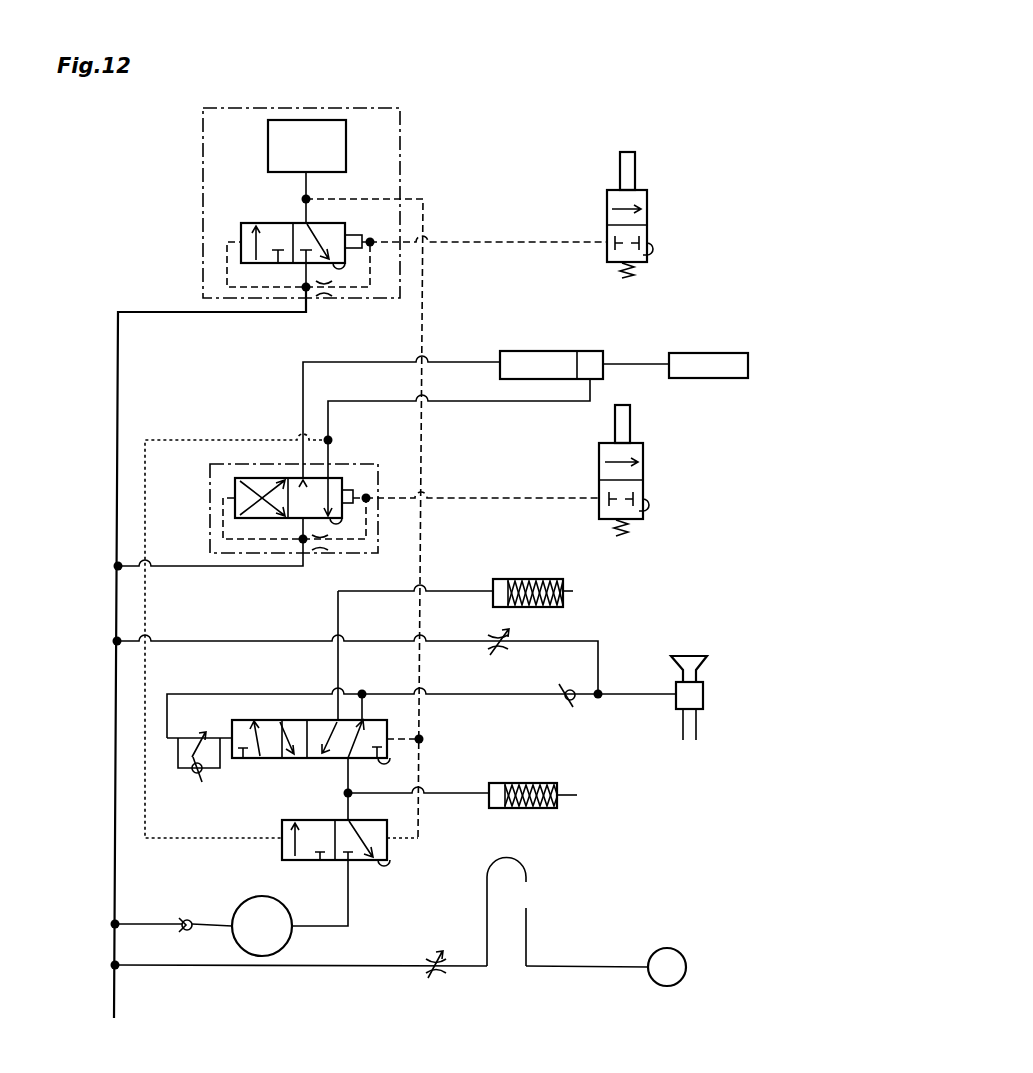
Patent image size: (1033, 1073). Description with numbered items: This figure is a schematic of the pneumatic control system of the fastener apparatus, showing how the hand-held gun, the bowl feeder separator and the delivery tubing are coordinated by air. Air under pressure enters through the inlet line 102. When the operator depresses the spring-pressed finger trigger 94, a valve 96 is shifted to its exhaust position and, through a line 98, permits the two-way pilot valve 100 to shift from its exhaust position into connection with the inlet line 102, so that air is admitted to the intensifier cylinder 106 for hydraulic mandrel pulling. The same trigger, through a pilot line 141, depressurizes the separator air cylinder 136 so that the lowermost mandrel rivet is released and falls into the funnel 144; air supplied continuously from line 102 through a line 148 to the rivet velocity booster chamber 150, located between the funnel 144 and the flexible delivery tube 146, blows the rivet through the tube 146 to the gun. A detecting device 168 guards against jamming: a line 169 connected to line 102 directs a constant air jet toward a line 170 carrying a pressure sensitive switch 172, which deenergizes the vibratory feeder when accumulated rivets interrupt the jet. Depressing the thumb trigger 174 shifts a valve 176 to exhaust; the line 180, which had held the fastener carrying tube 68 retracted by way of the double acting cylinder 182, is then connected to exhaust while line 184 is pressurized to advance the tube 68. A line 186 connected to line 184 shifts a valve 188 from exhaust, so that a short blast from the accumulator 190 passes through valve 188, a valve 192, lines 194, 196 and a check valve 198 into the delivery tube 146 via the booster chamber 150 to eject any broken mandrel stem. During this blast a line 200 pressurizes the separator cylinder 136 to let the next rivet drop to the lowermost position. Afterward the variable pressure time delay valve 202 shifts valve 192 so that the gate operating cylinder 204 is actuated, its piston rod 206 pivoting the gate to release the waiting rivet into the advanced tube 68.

The intensifier cylinder 106 is at (346, 160).
The 2-way pilot valve 100 is at (268, 222).
The line 98 is at (508, 240).
The finger trigger 94 is at (635, 160).
The valve 96 is at (648, 222).
The inlet line 102 is at (118, 370).
The double acting cylinder 182 is at (533, 351).
The fastener carrying tube 68 is at (718, 352).
The line 180 is at (303, 380).
The line 184 is at (492, 403).
The thumb trigger 174 is at (631, 425).
The valve 176 is at (648, 490).
The pilot line 141 is at (418, 542).
The line 186 is at (145, 608).
The gate operating cylinder 204 is at (520, 579).
The piston rod 206 is at (573, 591).
The line 194 is at (362, 712).
The check valve 198 is at (560, 690).
The line 148 is at (613, 694).
The funnel 144 is at (710, 661).
The rivet velocity booster chamber 150 is at (704, 697).
The variable pressure time delay valve 202 is at (193, 734).
The line 196 is at (500, 697).
The flexible delivery tube 146 is at (700, 729).
The valve 192 is at (300, 760).
The air cylinder 136 is at (537, 783).
The line 200 is at (452, 797).
The detecting device 168 is at (541, 862).
The valve 188 is at (388, 856).
The accumulator 190 is at (292, 941).
The line 169 is at (465, 970).
The line 170 is at (572, 970).
The pressure sensitive switch 172 is at (662, 988).